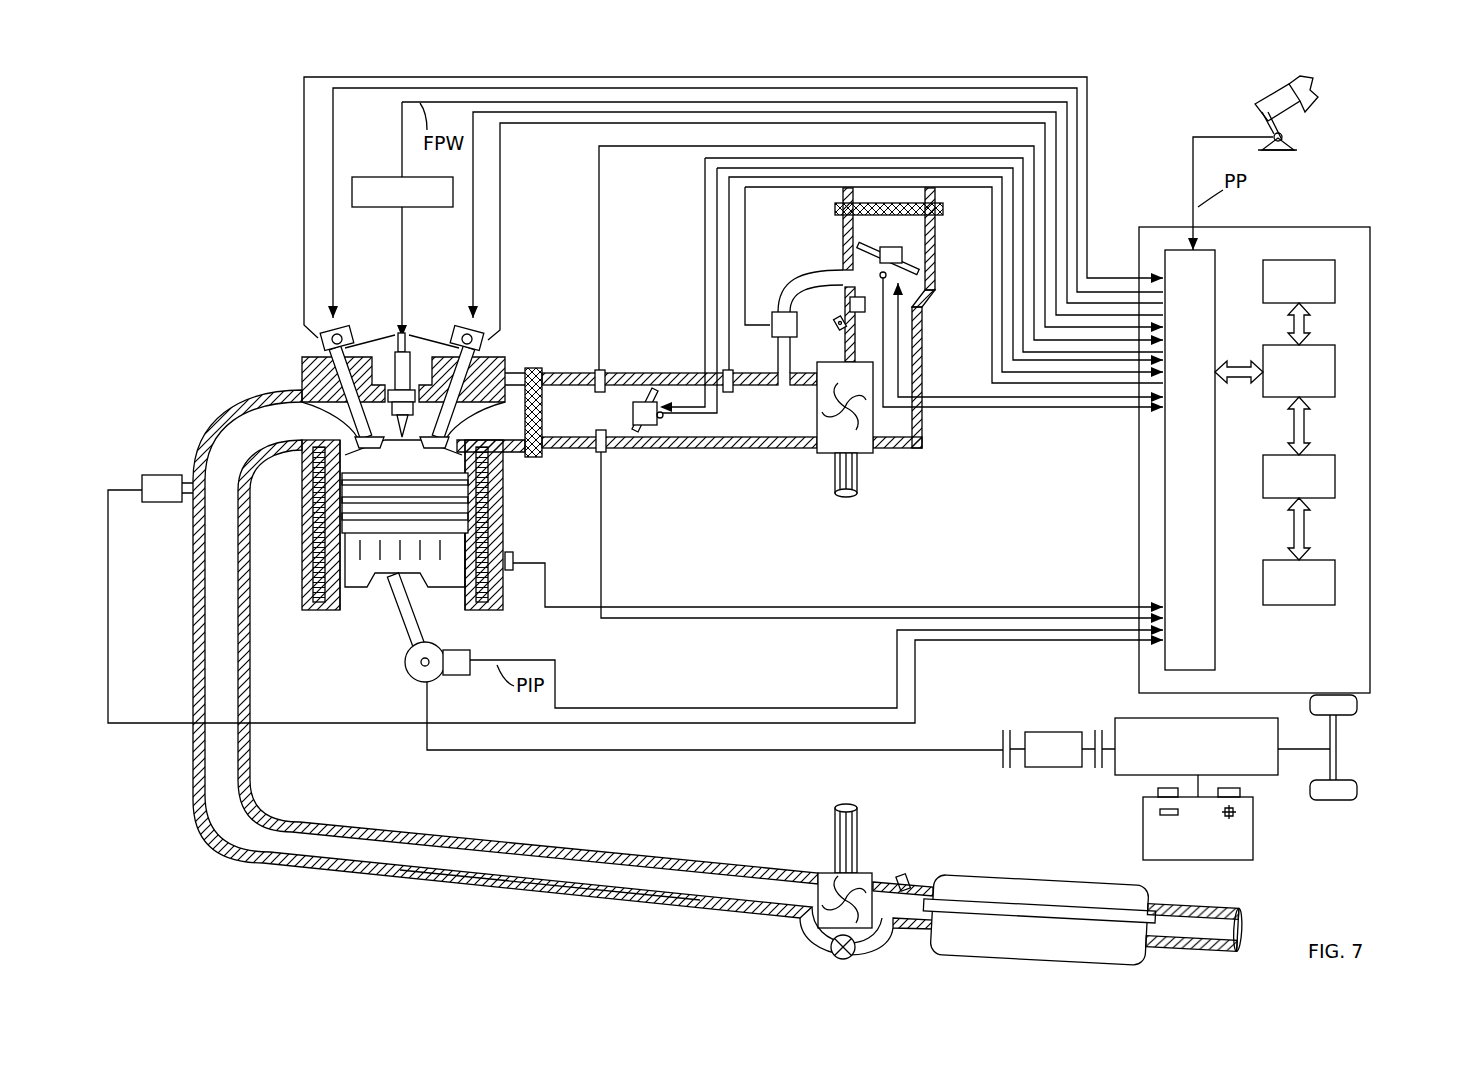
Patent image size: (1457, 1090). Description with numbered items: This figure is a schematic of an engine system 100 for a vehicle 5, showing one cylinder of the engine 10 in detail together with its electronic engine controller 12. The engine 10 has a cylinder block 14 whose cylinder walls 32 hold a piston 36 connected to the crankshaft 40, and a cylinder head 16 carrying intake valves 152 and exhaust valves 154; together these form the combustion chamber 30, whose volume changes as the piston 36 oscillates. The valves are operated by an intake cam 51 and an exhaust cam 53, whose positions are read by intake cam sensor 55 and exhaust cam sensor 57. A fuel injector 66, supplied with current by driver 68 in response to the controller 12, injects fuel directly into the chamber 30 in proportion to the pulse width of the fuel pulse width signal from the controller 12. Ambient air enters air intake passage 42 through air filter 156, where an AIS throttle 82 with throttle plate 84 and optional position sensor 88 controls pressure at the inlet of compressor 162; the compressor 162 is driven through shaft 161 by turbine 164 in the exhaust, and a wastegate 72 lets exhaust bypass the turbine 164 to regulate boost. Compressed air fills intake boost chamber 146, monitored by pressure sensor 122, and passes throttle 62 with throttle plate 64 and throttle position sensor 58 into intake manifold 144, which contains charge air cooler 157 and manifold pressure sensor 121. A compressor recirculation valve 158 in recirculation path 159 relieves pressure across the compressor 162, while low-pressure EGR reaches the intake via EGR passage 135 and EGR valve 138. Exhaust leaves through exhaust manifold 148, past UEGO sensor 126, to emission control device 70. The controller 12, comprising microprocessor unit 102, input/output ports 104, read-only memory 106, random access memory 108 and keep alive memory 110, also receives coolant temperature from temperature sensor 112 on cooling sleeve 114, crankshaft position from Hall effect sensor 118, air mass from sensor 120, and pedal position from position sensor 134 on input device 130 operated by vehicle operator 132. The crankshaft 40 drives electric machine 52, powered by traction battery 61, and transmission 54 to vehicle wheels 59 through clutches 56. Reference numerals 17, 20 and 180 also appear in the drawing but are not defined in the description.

The engine system 100 is at (152, 135).
The engine 10 is at (228, 293).
The vehicle 5 is at (1390, 730).
The driver 68 is at (390, 177).
The electronic engine controller 12 is at (1372, 232).
The input/output ports 104 is at (1217, 262).
The read-only memory 106 is at (1335, 278).
The microprocessor unit 102 is at (1335, 372).
The random access memory 108 is at (1335, 475).
The keep alive memory 110 is at (1335, 580).
The input device 130 is at (1258, 110).
The vehicle operator 132 is at (1312, 105).
The position sensor 134 is at (1297, 145).
The exhaust manifold 148 is at (292, 429).
The exhaust passage 180 is at (452, 903).
The UEGO sensor 126 is at (142, 478).
The cylinder block 14 is at (297, 505).
The coolant sleeve 17 is at (393, 467).
The cylinder block 20 is at (293, 627).
The cylinder walls 32 is at (343, 600).
The cooling sleeve 114 is at (502, 598).
The exhaust valves 154 is at (312, 395).
The combustion chamber 30 is at (380, 460).
The fuel injector 66 is at (406, 333).
The exhaust cam 53 is at (340, 332).
The intake cam 51 is at (465, 330).
The exhaust cam sensor 57 is at (330, 348).
The intake cam sensor 55 is at (476, 348).
The cylinder head 16 is at (517, 357).
The intake valves 152 is at (462, 435).
The piston 36 is at (385, 590).
The crankshaft 40 is at (410, 680).
The Hall effect sensor 118 is at (450, 678).
The temperature sensor 112 is at (514, 552).
The charge air cooler 157 is at (540, 456).
The intake manifold 144 is at (598, 424).
The intake boost chamber 146 is at (759, 424).
The pressure sensor 121 is at (602, 368).
The pressure sensor 122 is at (730, 370).
The air mass sensor 120 is at (604, 452).
The throttle 62 is at (648, 388).
The throttle plate 64 is at (655, 400).
The throttle position sensor 58 is at (664, 420).
The compressor recirculation valve 158 is at (772, 312).
The compressor recirculation path 159 is at (792, 365).
The air filter 156 is at (943, 208).
The air intake passage 42 is at (900, 244).
The AIS throttle 82 is at (856, 262).
The throttle plate 84 is at (852, 250).
The position sensor 88 is at (862, 265).
The EGR valve 138 is at (850, 303).
The EGR passage 135 is at (842, 326).
The compressor 162 is at (873, 452).
The shaft 161 is at (857, 488).
The turbine 164 is at (820, 875).
The wastegate 72 is at (830, 950).
The emission control device 70 is at (932, 935).
The clutches 56 is at (1003, 735).
The electric machine 52 is at (1048, 767).
The transmission 54 is at (1250, 775).
The vehicle wheels 59 is at (1335, 800).
The traction battery 61 is at (1192, 860).